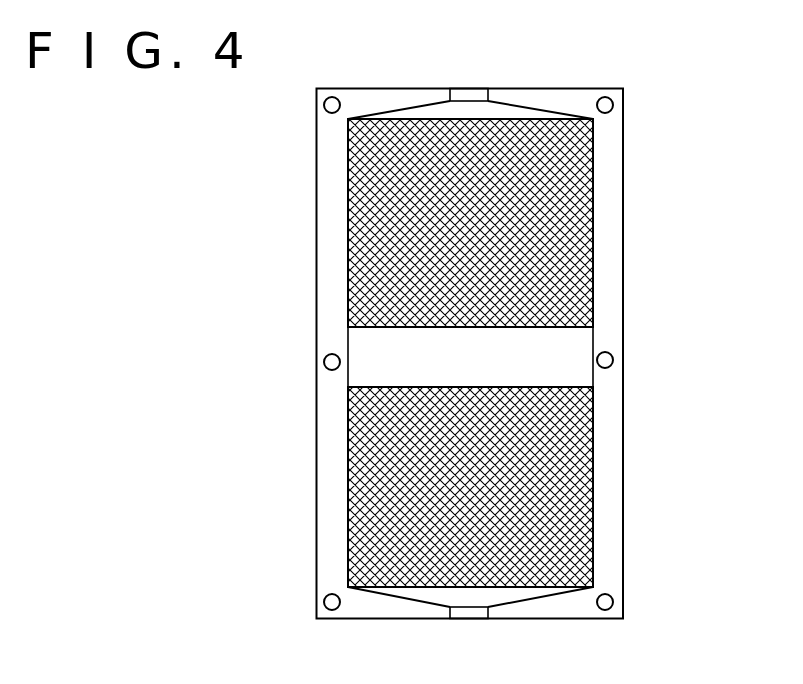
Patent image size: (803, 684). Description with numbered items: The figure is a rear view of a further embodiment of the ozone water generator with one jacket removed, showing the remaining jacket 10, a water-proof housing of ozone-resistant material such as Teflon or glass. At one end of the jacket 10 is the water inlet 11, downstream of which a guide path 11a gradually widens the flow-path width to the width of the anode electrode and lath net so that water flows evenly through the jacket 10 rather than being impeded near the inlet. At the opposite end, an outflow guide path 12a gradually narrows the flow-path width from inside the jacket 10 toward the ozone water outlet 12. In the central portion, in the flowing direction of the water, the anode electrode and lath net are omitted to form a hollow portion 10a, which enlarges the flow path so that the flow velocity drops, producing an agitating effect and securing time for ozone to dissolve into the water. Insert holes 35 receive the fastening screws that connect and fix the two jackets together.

The jacket 10 is at (617, 232).
The hollow portion 10a is at (575, 350).
The water inlet 11 is at (468, 614).
The guide path 11a is at (510, 595).
The ozone water outlet 12 is at (466, 94).
The outflow guide path 12a is at (515, 112).
The insert hole for the fastening screw 35 is at (324, 362).